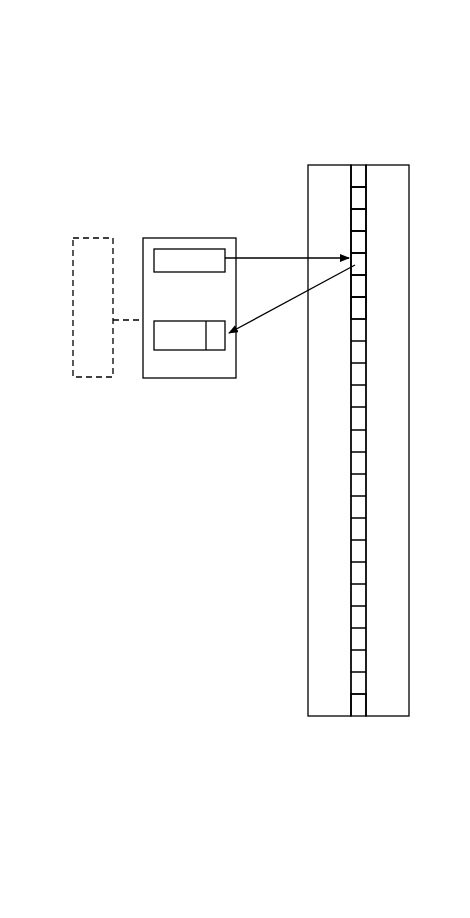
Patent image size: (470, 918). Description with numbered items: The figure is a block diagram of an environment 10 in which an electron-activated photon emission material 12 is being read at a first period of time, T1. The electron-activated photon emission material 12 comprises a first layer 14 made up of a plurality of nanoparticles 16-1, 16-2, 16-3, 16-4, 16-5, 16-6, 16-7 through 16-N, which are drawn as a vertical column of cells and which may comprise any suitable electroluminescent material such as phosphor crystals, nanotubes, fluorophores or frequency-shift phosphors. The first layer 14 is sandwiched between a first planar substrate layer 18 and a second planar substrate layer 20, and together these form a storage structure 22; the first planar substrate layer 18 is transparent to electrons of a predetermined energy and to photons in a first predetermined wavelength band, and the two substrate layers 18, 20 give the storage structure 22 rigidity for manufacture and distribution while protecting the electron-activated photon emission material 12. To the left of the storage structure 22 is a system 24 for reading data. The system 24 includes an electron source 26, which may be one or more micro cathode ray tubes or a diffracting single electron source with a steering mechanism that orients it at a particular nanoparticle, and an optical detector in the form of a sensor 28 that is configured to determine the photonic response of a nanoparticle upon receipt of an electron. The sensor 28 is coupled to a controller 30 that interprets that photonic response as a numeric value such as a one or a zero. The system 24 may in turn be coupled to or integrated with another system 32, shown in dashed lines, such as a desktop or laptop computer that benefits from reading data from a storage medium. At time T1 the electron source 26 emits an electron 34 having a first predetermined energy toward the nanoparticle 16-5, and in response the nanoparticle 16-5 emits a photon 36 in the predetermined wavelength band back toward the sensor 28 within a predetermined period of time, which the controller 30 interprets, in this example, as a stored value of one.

The environment 10 is at (358, 59).
The electron-activated photon emission material 12 is at (354, 129).
The first layer 14 is at (360, 160).
The nanoparticle 16-1 is at (360, 178).
The nanoparticle 16-2 is at (360, 200).
The nanoparticle 16-3 is at (360, 222).
The nanoparticle 16-4 is at (360, 244).
The nanoparticle 16-5 is at (360, 266).
The nanoparticle 16-6 is at (360, 288).
The nanoparticle 16-7 is at (360, 310).
The nanoparticle 16-N is at (357, 704).
The first planar substrate layer 18 is at (308, 641).
The second planar substrate layer 20 is at (409, 641).
The storage structure 22 is at (311, 126).
The system 24 is at (157, 238).
The electron source 26 is at (196, 255).
The sensor 28 is at (218, 345).
The controller 30 is at (172, 343).
The another system 32 is at (102, 302).
The electron 34 is at (278, 257).
The photon 36 is at (289, 302).